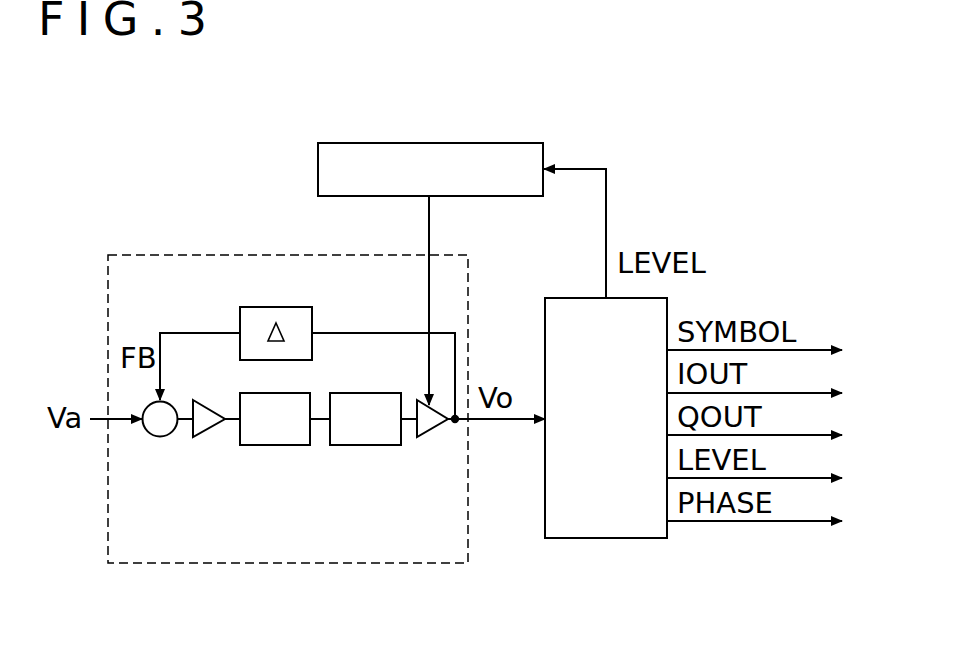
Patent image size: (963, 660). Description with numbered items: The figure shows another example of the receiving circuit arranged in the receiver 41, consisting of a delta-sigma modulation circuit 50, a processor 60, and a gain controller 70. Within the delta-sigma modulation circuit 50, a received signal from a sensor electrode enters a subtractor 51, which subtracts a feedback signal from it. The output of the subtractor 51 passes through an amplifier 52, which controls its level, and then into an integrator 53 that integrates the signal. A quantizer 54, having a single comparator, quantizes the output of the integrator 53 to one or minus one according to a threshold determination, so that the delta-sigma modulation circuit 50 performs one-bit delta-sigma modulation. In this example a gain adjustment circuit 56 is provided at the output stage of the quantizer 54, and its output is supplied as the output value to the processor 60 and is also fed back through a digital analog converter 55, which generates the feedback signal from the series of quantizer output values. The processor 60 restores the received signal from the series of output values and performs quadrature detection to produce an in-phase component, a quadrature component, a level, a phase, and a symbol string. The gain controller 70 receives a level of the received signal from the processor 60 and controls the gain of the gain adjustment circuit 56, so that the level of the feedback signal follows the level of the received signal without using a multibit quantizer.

The receiver 41 is at (650, 119).
The delta-sigma modulation circuit 50 is at (263, 565).
The subtractor 51 is at (159, 438).
The amplifier 52 is at (210, 432).
The integrator 53 is at (276, 447).
The quantizer 54 is at (366, 447).
The digital analog converter (DAC) 55 is at (238, 325).
The gain adjustment circuit 56 is at (433, 432).
The processor 60 is at (608, 540).
The gain controller 70 is at (428, 143).